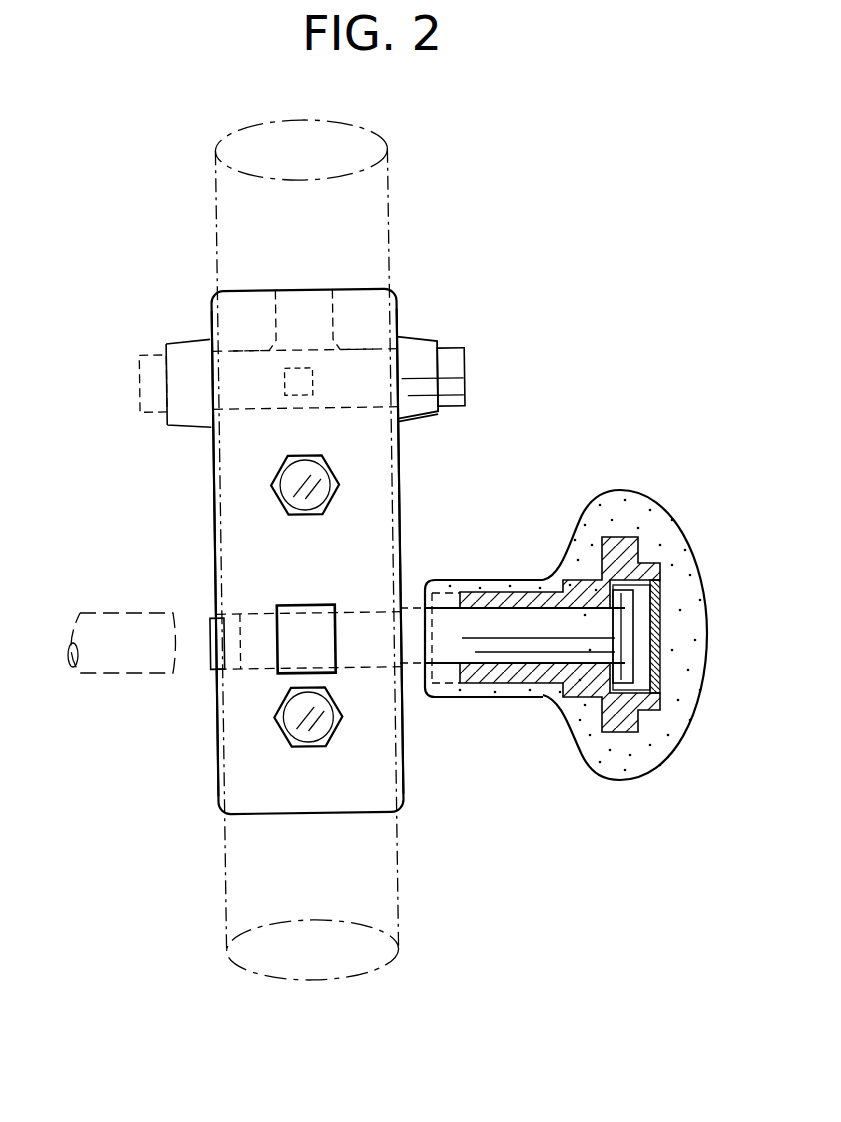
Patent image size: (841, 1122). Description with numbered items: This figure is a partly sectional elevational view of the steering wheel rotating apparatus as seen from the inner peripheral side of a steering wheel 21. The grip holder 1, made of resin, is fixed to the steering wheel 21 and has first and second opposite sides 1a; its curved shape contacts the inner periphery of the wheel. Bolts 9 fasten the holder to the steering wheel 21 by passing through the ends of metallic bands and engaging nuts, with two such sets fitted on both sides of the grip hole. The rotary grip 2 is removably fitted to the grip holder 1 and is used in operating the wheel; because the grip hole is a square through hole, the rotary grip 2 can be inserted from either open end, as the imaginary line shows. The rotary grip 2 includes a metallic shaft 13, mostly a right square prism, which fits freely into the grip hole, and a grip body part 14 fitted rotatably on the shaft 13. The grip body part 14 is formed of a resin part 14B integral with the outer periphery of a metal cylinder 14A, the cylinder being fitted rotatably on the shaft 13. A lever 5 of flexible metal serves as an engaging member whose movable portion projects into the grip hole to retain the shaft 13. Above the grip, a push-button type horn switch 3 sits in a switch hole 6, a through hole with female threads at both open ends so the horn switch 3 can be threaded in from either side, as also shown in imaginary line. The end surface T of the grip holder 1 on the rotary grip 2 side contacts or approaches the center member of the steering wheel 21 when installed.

The grip holder 1 is at (400, 497).
The first and second opposite sides 1a is at (213, 540).
The rotary grip 2 is at (132, 675).
The horn switch 3 is at (142, 388).
The lever 5 is at (293, 672).
The switch hole 6 is at (243, 350).
The bolts 9 is at (333, 460).
The shaft 13 is at (410, 670).
The grip body part 14 is at (665, 757).
The metal cylinder 14A is at (625, 560).
The resin part 14B is at (690, 657).
The steering wheel 21 is at (388, 160).
The end surface T is at (323, 813).